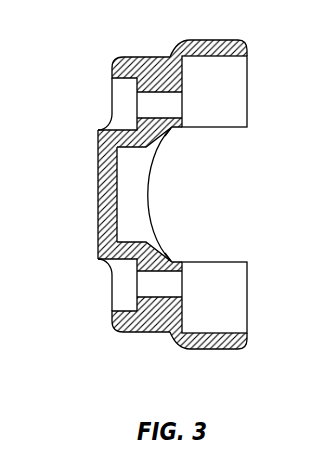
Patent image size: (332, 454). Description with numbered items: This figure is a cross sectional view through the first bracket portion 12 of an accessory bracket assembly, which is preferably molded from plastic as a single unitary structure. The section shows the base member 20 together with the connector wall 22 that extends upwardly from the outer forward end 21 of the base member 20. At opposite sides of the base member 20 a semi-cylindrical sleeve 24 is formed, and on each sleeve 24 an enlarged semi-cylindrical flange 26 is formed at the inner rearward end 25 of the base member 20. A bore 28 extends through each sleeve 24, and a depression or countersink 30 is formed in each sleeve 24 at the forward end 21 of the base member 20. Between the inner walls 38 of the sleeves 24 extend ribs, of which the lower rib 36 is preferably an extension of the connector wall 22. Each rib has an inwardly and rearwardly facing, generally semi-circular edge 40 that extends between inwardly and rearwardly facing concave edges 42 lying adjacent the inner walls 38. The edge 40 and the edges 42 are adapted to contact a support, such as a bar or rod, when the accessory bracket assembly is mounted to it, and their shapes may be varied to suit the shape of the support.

The first bracket portion 12 is at (134, 50).
The base member 20 is at (157, 54).
The outer forward end 21 is at (94, 156).
The connector wall 22 is at (105, 183).
The semi-cylindrical sleeve 24 is at (116, 70).
The inner rearward end 25 is at (246, 178).
The semi-cylindrical flange 26 is at (238, 42).
The bore 28 is at (173, 101).
The countersink 30 is at (117, 100).
The lower rib 36 is at (128, 228).
The inner wall 38 is at (173, 129).
The semi-circular edge 40 is at (147, 193).
The concave edge 42 is at (165, 143).